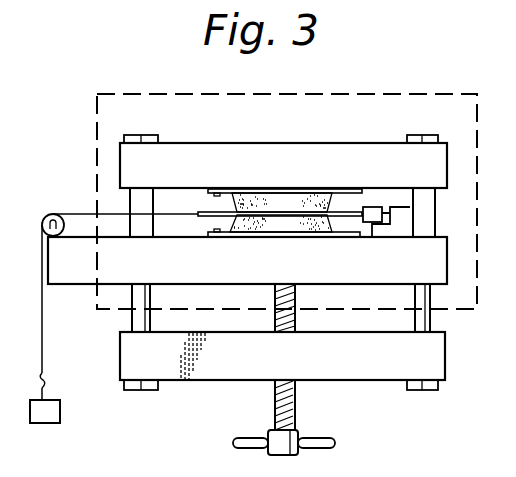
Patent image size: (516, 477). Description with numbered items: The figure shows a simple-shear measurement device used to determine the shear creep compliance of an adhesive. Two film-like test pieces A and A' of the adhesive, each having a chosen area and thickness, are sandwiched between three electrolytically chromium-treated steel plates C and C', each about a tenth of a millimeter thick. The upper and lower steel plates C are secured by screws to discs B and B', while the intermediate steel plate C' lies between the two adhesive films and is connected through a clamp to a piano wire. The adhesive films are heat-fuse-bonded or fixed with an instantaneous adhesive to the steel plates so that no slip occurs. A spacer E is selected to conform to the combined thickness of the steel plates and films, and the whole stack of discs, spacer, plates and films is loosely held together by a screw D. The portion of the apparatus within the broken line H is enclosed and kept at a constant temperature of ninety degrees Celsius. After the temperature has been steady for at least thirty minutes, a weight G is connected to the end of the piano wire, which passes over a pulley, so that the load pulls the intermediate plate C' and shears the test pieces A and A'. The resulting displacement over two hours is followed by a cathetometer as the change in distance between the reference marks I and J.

The film-like test piece A is at (282, 203).
The film-like test piece A' is at (281, 223).
The disc B is at (283, 161).
The disc B' is at (247, 260).
The steel plate C is at (291, 216).
The intermediate steel plate C' is at (232, 180).
The screw D is at (283, 455).
The spacer E is at (282, 212).
The weight G is at (47, 423).
The constant-temperature enclosure H is at (287, 187).
The reference point I is at (399, 225).
The reference point J is at (368, 231).